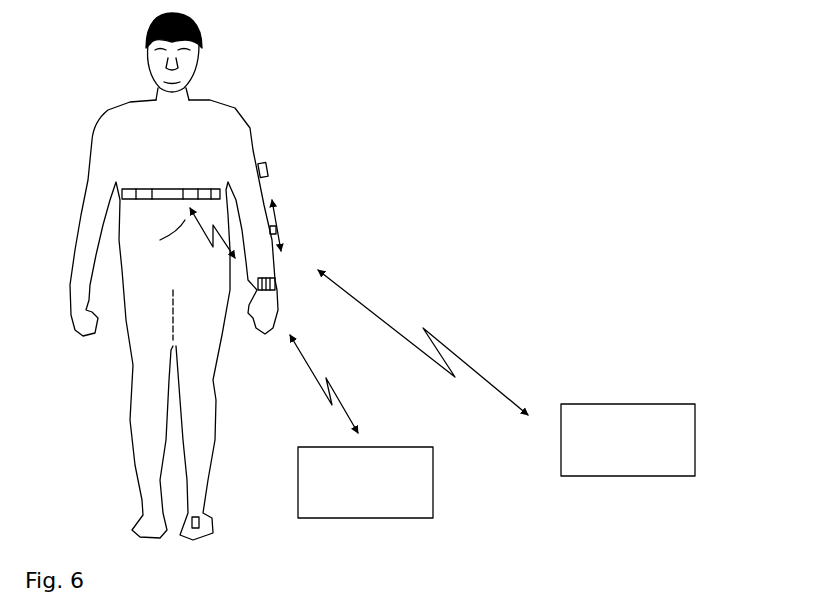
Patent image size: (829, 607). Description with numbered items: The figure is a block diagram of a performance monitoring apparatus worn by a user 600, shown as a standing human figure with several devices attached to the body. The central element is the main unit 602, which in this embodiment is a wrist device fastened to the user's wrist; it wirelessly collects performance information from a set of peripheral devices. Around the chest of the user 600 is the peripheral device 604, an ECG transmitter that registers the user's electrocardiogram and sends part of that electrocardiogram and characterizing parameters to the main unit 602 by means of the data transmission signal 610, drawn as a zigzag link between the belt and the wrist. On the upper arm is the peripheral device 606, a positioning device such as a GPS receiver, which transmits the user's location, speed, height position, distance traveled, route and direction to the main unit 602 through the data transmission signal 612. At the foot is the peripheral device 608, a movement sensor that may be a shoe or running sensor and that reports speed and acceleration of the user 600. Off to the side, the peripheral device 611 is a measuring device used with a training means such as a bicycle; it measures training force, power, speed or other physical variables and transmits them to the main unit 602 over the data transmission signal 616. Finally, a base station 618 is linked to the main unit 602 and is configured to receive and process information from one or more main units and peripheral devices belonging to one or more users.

The user 600 is at (272, 69).
The main unit 602 is at (277, 285).
The peripheral device (ECG transmitter) 604 is at (162, 188).
The peripheral device (positioning device) 606 is at (268, 170).
The peripheral device (movement sensor) 608 is at (200, 522).
The data transmission signal 610 is at (198, 225).
The peripheral device (measuring device) 611 is at (433, 483).
The data transmission signal 612 is at (277, 230).
The data transmission signal 616 is at (337, 392).
The base station 618 is at (695, 440).